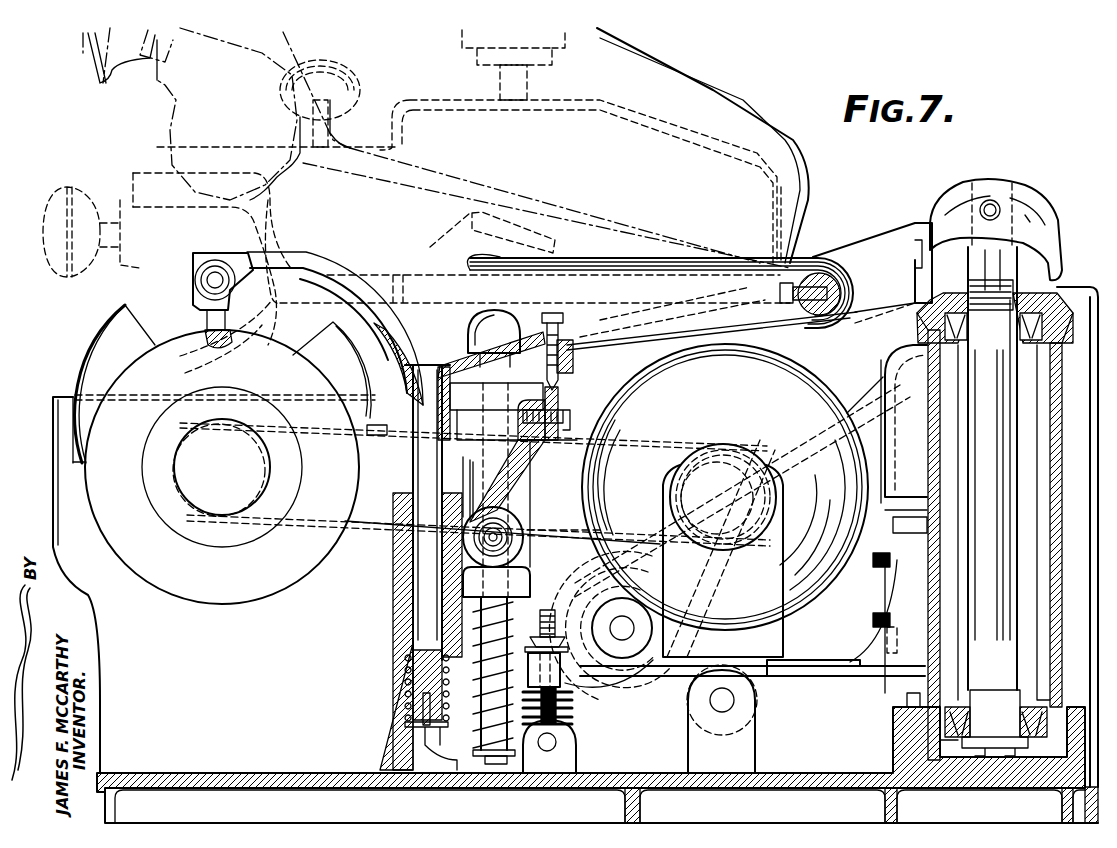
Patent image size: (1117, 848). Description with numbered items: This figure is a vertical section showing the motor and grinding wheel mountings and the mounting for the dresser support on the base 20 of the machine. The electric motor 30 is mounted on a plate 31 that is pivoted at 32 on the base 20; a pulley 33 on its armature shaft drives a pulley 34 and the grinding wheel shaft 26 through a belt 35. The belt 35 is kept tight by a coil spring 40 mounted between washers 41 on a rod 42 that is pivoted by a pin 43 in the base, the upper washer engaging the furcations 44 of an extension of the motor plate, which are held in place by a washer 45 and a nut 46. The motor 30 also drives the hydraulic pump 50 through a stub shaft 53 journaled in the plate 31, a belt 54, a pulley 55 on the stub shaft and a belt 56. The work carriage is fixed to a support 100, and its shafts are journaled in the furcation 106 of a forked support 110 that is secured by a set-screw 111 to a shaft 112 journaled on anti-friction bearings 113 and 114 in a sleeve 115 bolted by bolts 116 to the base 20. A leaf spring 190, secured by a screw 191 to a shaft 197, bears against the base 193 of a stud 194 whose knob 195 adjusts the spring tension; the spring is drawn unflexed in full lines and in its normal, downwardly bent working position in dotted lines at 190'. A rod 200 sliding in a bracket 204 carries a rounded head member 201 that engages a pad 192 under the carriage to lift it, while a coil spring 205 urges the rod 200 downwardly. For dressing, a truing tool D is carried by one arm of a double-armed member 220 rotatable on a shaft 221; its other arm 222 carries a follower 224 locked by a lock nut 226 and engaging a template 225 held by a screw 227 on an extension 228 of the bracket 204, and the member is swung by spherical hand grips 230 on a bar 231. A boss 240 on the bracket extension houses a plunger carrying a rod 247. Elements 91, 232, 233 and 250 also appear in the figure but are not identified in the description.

The base 20 is at (812, 781).
The grinding wheel shaft 26 is at (250, 462).
The electric motor 30 is at (790, 393).
The plate 31 is at (807, 668).
The pivot 32 is at (722, 708).
The pulley 33 is at (723, 443).
The pulley 34 is at (182, 447).
The belt 35 is at (362, 528).
The coil spring 40 is at (572, 710).
The washers 41 is at (573, 722).
The rod 42 is at (547, 613).
The pin 43 is at (548, 751).
The furcations 44 is at (568, 683).
The washer 45 is at (541, 647).
The nut 46 is at (540, 632).
The hydraulic pump 50 is at (900, 423).
The stub shaft 53 is at (622, 618).
The belt 54 is at (633, 695).
The pulley 55 is at (640, 655).
The belt 56 is at (862, 387).
The handle 91 is at (343, 62).
The support 100 is at (650, 120).
The furcation 106 is at (873, 242).
The forked support 110 is at (1045, 222).
The set-screw 111 is at (994, 200).
The shaft 112 is at (1007, 468).
The anti-friction bearing 113 is at (1040, 342).
The anti-friction bearing 114 is at (1040, 705).
The sleeve 115 is at (1056, 515).
The bolts 116 is at (906, 699).
The leaf spring 190 is at (660, 257).
The leaf spring in flexed position 190' is at (712, 331).
The screw 191 is at (783, 297).
The pad 192 is at (433, 282).
The base of stud 193 is at (493, 243).
The stud 194 is at (528, 85).
The knob 195 is at (567, 47).
The shaft 197 is at (840, 293).
The rod 200 is at (486, 653).
The rounded head member 201 is at (470, 322).
The bracket 204 is at (398, 597).
The coil spring 205 is at (493, 737).
The double-armed member 220 is at (325, 272).
The shaft 221 is at (420, 462).
The arm 222 is at (457, 372).
The follower 224 is at (560, 382).
The template 225 is at (560, 402).
The lock nut 226 is at (565, 328).
The screw 227 is at (530, 453).
The extension 228 is at (517, 463).
The spherical hand grips 230 is at (195, 272).
The bar 231 is at (443, 697).
The bolt 232 is at (413, 723).
The plate 233 is at (425, 730).
The boss 240 is at (515, 543).
The rod 247 is at (497, 535).
The phantom handle 250 is at (97, 63).
The truing tool D is at (205, 332).